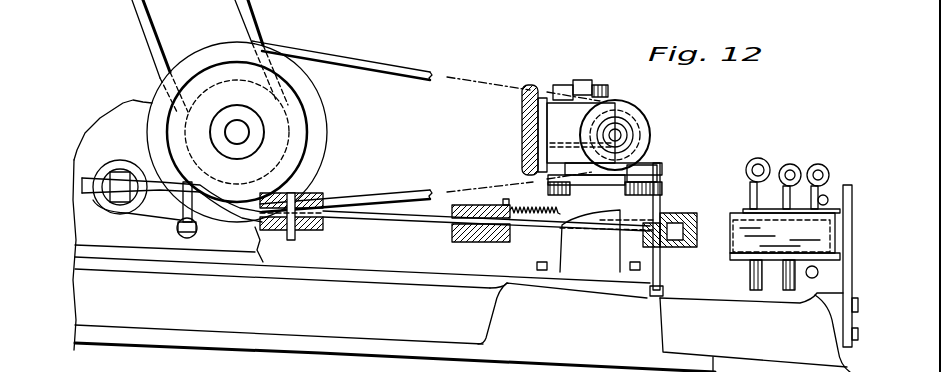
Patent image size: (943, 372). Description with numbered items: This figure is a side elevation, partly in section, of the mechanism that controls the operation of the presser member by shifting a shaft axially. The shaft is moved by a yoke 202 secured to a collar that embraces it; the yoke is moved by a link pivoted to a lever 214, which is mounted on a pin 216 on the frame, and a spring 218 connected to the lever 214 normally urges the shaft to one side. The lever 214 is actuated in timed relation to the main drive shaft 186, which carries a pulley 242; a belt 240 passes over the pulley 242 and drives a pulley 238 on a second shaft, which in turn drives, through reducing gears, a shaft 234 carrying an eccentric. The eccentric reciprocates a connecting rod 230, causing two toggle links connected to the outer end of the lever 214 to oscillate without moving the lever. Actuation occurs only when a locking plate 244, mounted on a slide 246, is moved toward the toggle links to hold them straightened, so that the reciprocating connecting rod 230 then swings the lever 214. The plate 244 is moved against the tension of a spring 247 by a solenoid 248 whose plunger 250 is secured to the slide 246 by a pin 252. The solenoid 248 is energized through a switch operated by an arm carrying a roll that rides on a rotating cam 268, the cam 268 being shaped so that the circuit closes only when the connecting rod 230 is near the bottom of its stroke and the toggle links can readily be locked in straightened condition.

The main drive shaft 186 is at (249, 130).
The yoke 202 is at (93, 170).
The lever 214 is at (385, 218).
The pin 216 is at (293, 243).
The spring 218 is at (177, 225).
The connecting rod 230 is at (647, 183).
The shaft 234 is at (558, 180).
The pulley 238 is at (650, 136).
The belt 240 is at (417, 80).
The pulley 242 is at (322, 135).
The plate 244 is at (553, 223).
The slide 246 is at (602, 233).
The spring 247 is at (540, 217).
The solenoid 248 is at (775, 178).
The plunger 250 is at (718, 218).
The pin 252 is at (663, 260).
The cam 268 is at (605, 93).